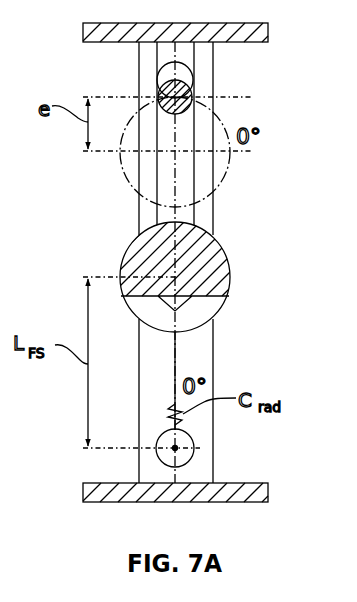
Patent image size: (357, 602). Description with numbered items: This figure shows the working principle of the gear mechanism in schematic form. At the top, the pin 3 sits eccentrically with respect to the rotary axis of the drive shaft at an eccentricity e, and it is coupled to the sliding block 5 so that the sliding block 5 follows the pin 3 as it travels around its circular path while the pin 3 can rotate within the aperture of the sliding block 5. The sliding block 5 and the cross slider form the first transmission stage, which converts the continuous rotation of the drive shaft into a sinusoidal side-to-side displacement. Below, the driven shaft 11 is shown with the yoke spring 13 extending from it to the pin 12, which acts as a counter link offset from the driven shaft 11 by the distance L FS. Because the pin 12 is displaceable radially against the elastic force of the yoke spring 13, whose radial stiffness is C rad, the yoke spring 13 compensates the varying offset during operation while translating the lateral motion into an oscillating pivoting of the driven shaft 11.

The pin 3 is at (188, 92).
The sliding block 5 is at (198, 185).
The driven shaft 11 is at (225, 247).
The yoke spring 13 is at (178, 360).
The pin 12 is at (188, 455).